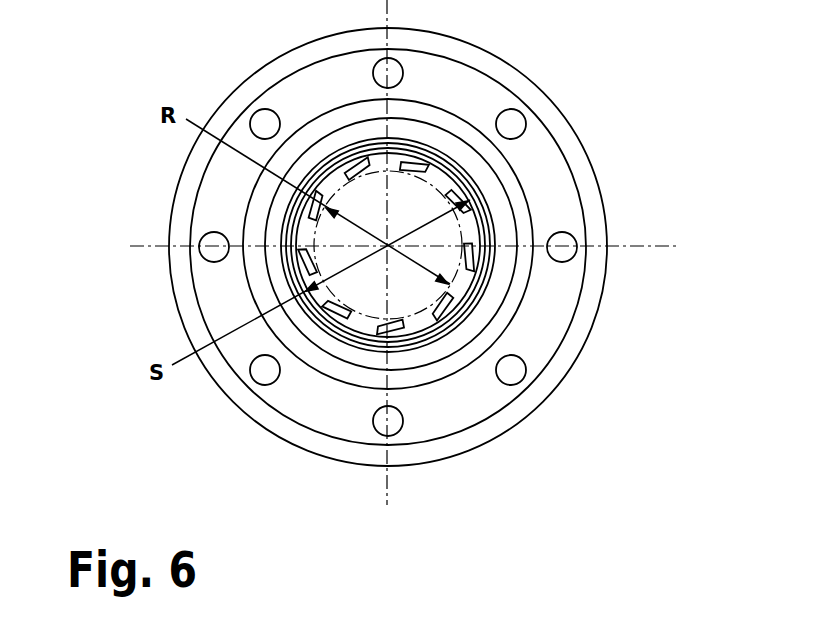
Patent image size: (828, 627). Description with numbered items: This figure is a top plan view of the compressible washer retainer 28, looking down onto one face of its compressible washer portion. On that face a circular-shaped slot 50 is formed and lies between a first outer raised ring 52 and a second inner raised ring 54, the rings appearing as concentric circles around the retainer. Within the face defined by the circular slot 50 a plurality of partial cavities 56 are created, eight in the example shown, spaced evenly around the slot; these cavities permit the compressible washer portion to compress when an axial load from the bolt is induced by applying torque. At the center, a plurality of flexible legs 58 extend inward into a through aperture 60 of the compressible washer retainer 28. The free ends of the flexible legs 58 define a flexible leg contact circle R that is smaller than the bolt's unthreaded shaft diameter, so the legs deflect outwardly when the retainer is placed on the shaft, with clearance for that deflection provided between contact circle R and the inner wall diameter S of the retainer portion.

The compressible washer retainer 28 is at (655, 127).
The circular-shaped slot 50 is at (547, 165).
The first outer raised ring 52 is at (590, 300).
The second inner raised ring 54 is at (510, 312).
The partial cavities 56 is at (518, 120).
The flexible legs 58 is at (420, 160).
The through aperture 60 is at (446, 225).